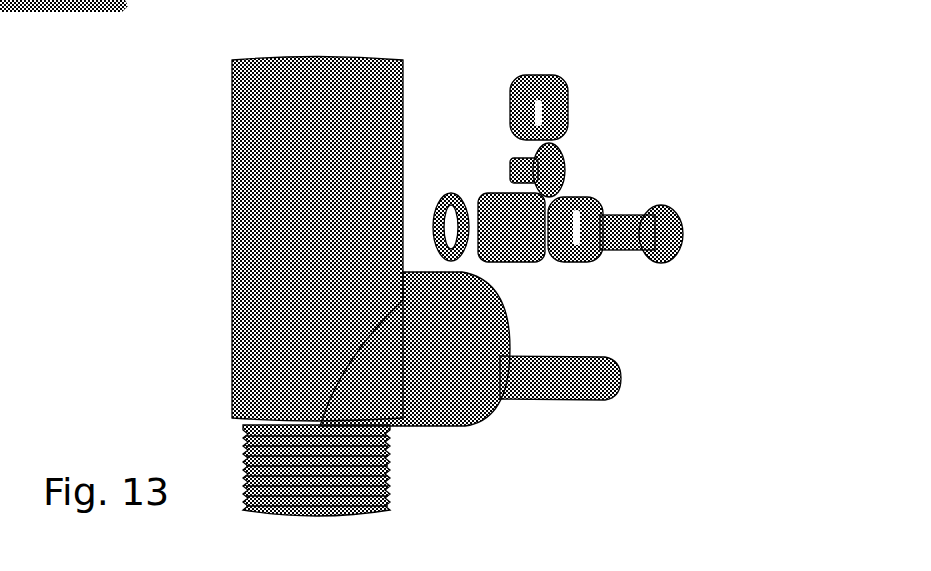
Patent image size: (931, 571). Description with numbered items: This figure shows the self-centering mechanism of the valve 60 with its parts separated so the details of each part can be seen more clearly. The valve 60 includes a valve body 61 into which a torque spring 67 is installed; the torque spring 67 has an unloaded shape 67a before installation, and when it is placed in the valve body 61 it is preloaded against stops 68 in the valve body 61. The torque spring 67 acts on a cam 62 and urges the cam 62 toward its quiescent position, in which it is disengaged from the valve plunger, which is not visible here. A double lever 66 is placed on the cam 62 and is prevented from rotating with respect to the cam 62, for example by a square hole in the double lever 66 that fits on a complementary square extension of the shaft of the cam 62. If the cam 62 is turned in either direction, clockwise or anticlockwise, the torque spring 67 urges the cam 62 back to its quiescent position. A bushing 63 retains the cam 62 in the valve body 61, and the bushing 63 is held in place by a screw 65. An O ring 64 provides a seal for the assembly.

The valve 60 is at (192, 114).
The valve body 61 is at (265, 216).
The cam 62 is at (503, 400).
The bushing 63 is at (520, 254).
The O ring 64 is at (447, 195).
The screw 65 is at (562, 158).
The double lever 66 is at (618, 240).
The torque spring 67 is at (590, 198).
The unloaded shape of torque spring 67a is at (568, 96).
The stops 68 is at (440, 373).